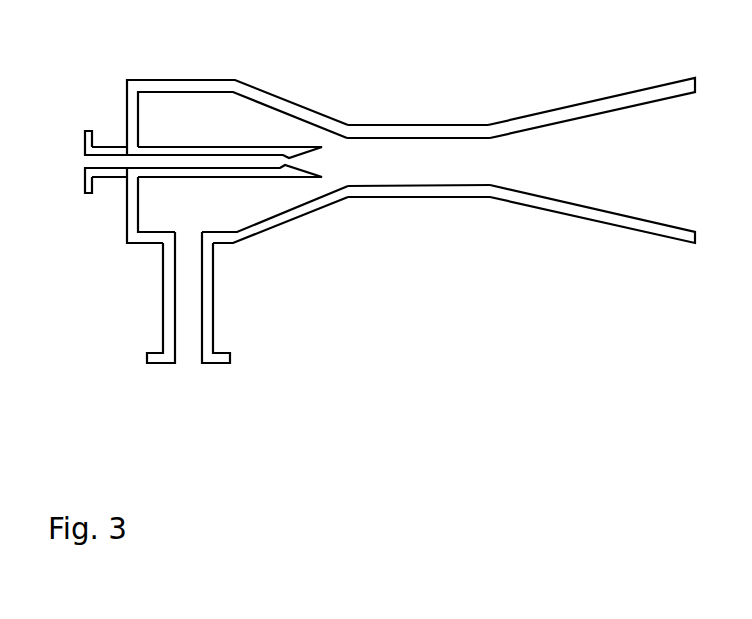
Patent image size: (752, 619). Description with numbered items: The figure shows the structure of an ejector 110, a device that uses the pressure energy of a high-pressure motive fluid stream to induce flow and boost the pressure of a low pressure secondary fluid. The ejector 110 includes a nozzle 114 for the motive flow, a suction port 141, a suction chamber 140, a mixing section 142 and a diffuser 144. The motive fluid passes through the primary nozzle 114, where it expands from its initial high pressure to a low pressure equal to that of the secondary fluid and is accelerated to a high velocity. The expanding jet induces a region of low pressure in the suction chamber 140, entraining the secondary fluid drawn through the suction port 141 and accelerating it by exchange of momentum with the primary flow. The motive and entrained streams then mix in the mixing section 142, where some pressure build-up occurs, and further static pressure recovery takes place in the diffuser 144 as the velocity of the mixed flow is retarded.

The ejector 110 is at (365, 199).
The nozzle 114 is at (283, 168).
The suction chamber 140 is at (188, 222).
The suction port 141 is at (190, 333).
The mixing section 142 is at (380, 162).
The diffuser 144 is at (478, 163).